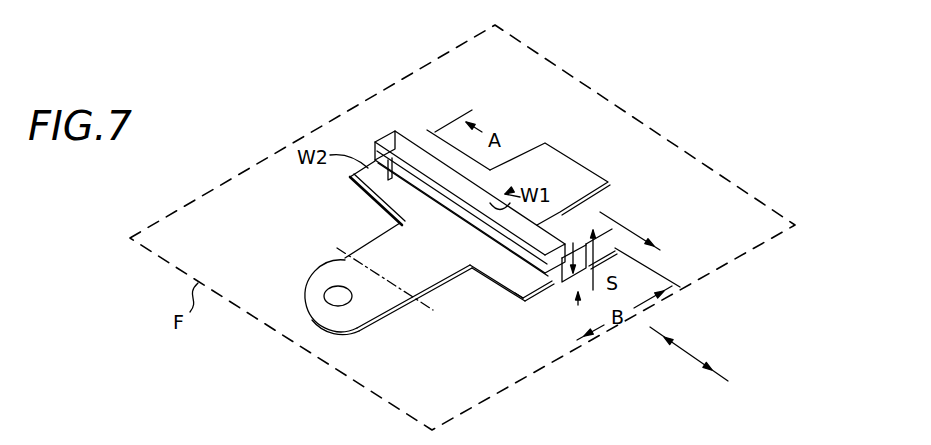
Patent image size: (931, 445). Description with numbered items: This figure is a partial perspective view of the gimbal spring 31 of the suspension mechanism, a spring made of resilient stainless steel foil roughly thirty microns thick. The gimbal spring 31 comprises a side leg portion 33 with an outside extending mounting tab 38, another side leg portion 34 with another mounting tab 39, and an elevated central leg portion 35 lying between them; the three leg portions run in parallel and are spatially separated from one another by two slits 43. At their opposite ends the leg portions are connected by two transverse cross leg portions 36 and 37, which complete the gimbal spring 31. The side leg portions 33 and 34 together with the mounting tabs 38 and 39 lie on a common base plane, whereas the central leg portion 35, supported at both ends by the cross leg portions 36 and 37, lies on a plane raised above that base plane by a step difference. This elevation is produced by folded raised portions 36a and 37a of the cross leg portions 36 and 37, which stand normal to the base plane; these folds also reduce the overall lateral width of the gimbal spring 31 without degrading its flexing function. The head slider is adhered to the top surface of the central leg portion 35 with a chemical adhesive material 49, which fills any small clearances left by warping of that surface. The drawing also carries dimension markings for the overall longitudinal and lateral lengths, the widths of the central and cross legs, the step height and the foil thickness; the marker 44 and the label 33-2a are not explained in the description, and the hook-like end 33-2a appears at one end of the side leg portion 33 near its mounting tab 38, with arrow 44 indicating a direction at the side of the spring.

The gimbal spring 31 is at (738, 223).
The side leg portion 33 is at (383, 210).
The curled hook end 33-2a is at (347, 298).
The side leg portion 34 is at (600, 212).
The central leg portion 35 is at (412, 140).
The cross leg portion 36 is at (342, 185).
The folded raised portion 36a is at (371, 166).
The cross leg portion 37 is at (550, 287).
The folded raised portion 37a is at (517, 297).
The mounting tab 38 is at (340, 268).
The mounting tab 39 is at (600, 182).
The slit 43 is at (518, 285).
The direction of movement 44 is at (689, 354).
The chemical adhesive material 49 is at (427, 308).